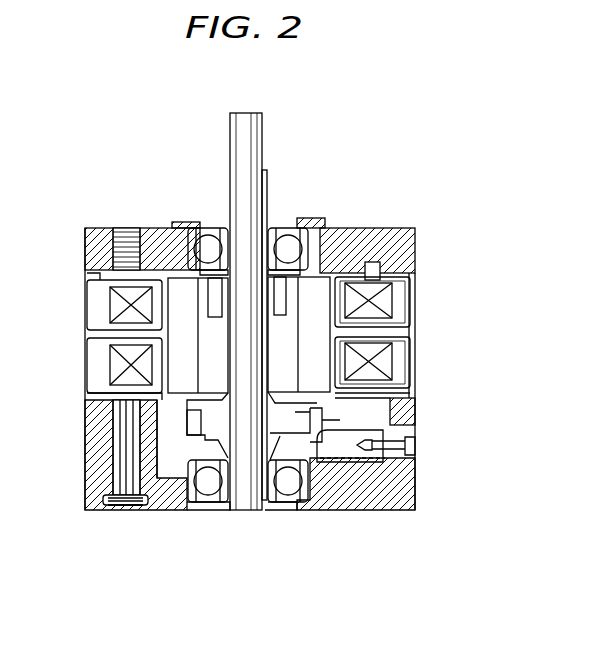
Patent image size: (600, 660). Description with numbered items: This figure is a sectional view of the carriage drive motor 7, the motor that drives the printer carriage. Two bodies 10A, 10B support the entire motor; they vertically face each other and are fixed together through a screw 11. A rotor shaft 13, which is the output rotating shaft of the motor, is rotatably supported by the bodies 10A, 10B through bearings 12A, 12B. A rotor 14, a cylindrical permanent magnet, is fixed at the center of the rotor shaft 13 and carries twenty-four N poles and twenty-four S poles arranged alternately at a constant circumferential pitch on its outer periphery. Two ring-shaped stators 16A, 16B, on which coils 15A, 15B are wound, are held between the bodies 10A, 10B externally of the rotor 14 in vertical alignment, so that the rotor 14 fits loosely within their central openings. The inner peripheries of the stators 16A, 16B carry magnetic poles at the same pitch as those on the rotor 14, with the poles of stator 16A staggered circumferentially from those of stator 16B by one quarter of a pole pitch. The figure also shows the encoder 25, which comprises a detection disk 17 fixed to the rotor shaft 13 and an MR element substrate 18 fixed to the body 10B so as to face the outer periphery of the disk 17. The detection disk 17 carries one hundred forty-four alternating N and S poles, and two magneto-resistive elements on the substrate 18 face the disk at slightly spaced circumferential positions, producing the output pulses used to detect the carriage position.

The carriage drive motor 7 is at (402, 203).
The body 10A is at (405, 242).
The body 10B is at (405, 488).
The screw 11 is at (108, 506).
The bearing 12A is at (280, 228).
The bearing 12B is at (208, 505).
The rotor shaft 13 is at (262, 130).
The rotor 14 is at (318, 290).
The coil 15A is at (397, 293).
The coil 15B is at (388, 360).
The stator 16A is at (340, 313).
The stator 16B is at (340, 375).
The detection disk 17 is at (300, 428).
The MR element substrate 18 is at (330, 430).
The encoder 25 is at (344, 556).